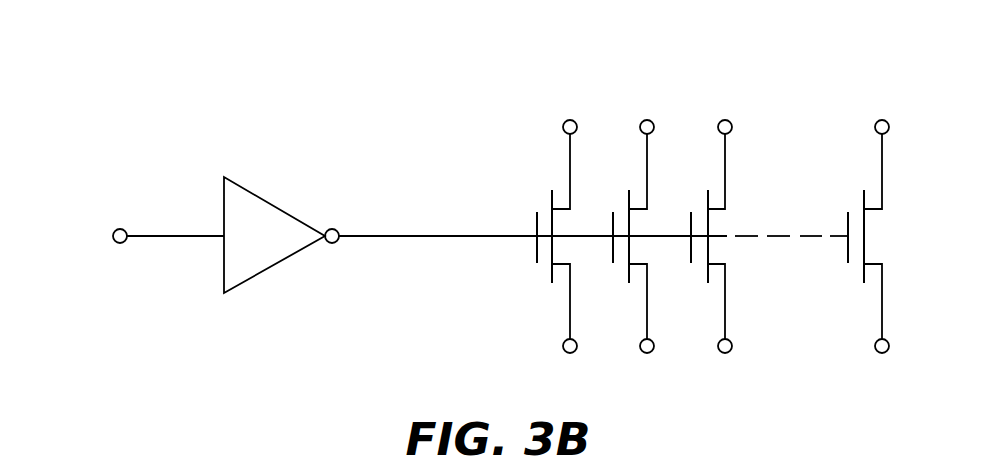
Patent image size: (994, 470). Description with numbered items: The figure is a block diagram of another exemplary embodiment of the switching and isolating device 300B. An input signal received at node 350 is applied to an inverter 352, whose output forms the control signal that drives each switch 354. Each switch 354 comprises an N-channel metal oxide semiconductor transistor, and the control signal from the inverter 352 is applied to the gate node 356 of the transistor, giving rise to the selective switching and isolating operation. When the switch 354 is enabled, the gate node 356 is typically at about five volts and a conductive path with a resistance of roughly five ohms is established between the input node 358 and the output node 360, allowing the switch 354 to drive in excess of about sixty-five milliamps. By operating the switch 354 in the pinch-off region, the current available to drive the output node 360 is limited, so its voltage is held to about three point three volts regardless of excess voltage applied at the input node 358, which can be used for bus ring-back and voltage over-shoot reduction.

The switching and isolating device 300B is at (212, 77).
The node 350 is at (116, 243).
The inverter 352 is at (250, 298).
The switch 354 is at (535, 299).
The gate node 356 is at (536, 250).
The input node 358 is at (565, 132).
The output node 360 is at (565, 352).